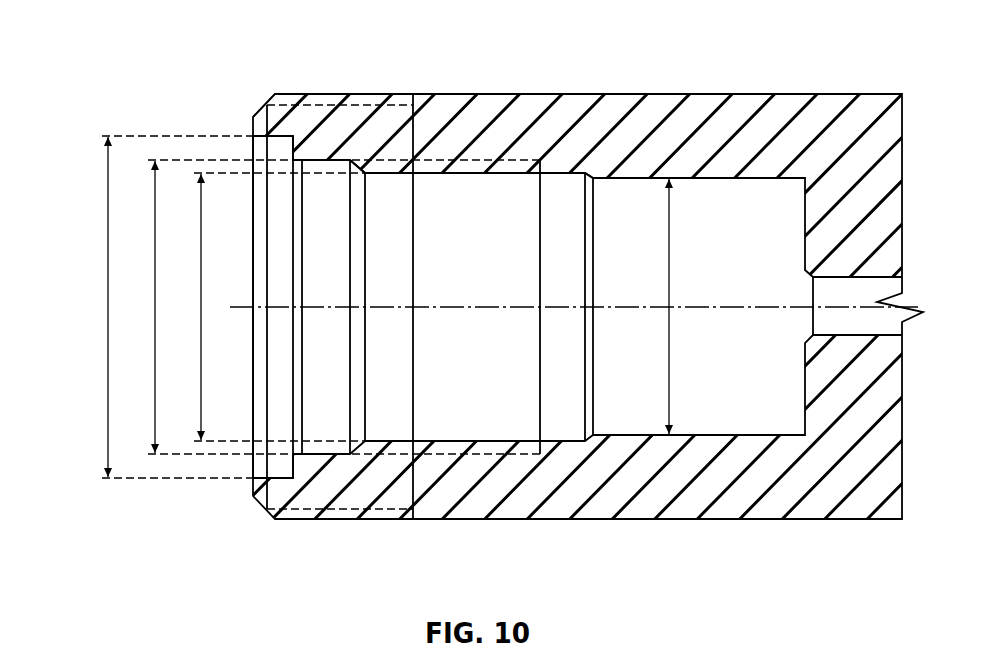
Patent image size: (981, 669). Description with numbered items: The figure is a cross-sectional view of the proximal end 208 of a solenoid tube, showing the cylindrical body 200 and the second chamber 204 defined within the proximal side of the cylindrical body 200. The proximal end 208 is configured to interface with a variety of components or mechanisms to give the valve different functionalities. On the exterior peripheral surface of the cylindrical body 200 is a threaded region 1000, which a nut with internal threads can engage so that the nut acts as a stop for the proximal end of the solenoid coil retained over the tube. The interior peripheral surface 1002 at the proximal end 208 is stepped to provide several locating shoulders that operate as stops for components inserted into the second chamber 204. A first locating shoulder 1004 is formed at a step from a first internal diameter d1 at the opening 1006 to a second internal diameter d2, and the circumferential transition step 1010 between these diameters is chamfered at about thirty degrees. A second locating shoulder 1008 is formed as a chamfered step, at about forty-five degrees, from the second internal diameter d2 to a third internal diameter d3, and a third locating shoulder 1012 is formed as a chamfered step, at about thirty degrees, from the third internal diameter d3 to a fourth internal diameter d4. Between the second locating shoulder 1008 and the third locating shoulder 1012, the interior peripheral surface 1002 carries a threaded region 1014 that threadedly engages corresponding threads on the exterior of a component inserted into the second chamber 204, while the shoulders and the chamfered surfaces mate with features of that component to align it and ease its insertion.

The cylindrical body 200 is at (667, 107).
The second chamber 204 is at (733, 207).
The proximal end 208 is at (124, 86).
The threaded region 1000 is at (415, 92).
The interior peripheral surface 1002 is at (318, 450).
The first locating shoulder 1004 is at (290, 141).
The opening 1006 is at (247, 332).
The second locating shoulder 1008 is at (351, 168).
The circumferential transition step 1010 is at (292, 451).
The third locating shoulder 1012 is at (586, 180).
The threaded region 1014 is at (540, 178).
The first internal diameter d1 is at (107, 308).
The second internal diameter d2 is at (154, 308).
The third internal diameter d3 is at (200, 308).
The fourth internal diameter d4 is at (668, 280).